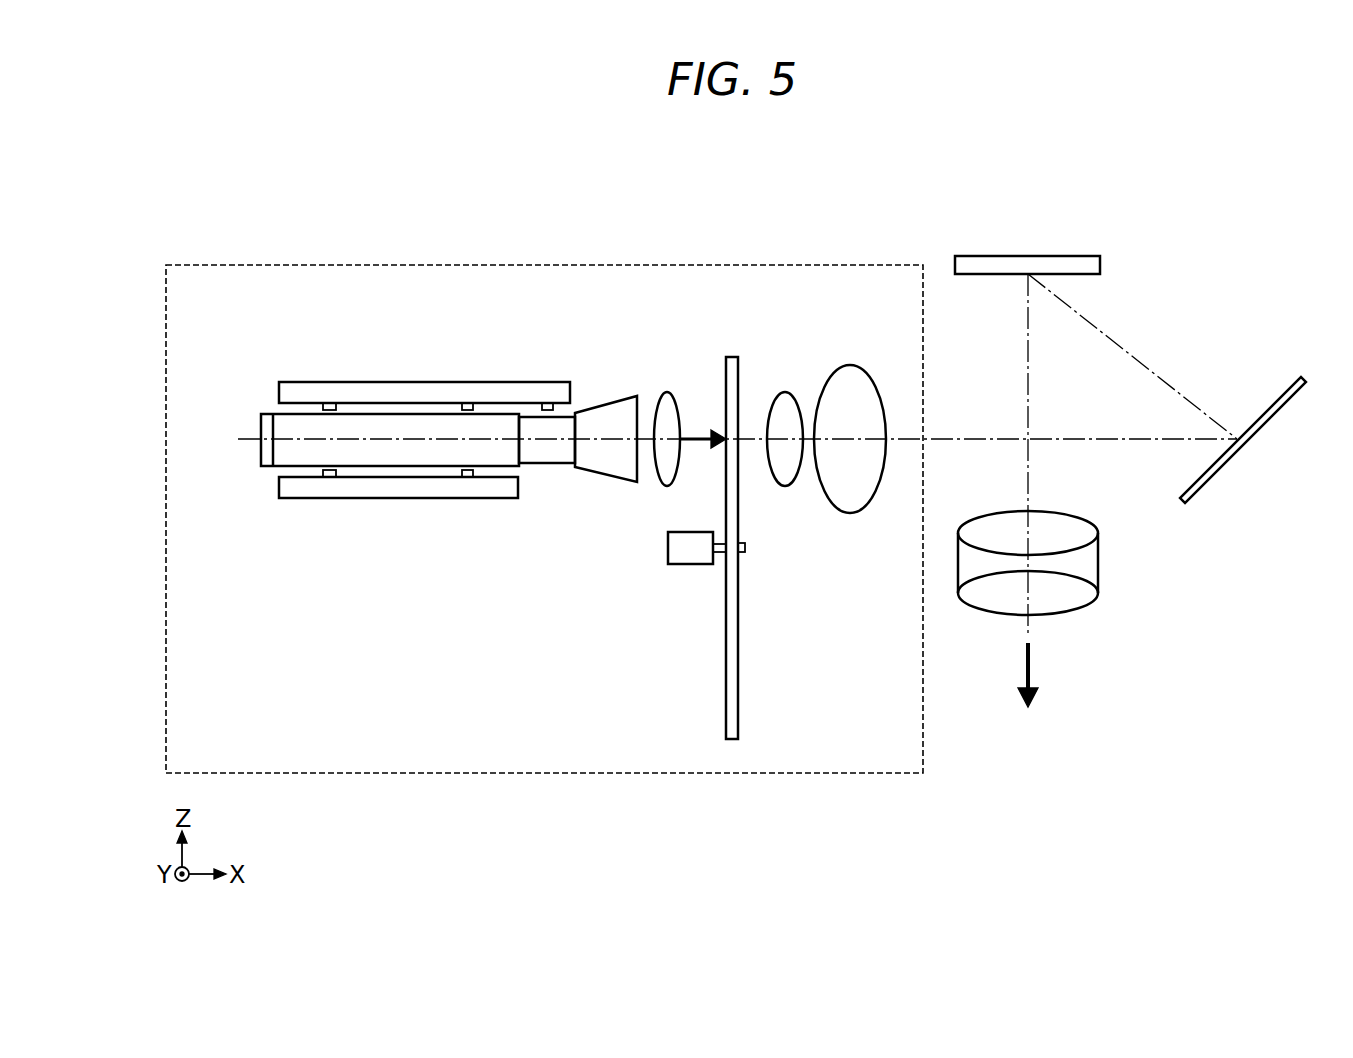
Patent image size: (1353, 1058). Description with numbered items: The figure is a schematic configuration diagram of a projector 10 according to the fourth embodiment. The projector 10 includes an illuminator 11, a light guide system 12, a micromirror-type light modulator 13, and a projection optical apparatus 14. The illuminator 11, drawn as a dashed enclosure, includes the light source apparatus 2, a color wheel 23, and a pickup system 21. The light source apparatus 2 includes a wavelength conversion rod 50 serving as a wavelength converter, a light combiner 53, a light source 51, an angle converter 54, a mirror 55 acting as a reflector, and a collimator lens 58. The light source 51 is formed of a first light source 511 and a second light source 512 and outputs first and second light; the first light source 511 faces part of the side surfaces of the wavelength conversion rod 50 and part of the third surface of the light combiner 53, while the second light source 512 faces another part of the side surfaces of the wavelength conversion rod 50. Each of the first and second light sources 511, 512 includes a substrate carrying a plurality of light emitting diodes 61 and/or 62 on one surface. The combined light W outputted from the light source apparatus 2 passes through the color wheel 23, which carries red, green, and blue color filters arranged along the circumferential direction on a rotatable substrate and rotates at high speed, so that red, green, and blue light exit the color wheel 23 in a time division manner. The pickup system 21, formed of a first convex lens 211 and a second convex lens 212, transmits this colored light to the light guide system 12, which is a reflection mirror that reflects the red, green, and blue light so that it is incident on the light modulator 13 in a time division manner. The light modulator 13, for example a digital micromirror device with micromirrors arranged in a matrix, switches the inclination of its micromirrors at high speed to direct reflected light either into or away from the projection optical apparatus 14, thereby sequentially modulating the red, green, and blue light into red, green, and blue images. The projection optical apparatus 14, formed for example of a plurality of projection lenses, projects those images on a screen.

The projector 10 is at (895, 238).
The illuminator 11 is at (415, 265).
The light source apparatus 2 is at (413, 592).
The wavelength conversion rod 50 is at (400, 462).
The mirror 55 is at (266, 430).
The light combiner 53 is at (540, 458).
The angle converter 54 is at (597, 462).
The light source 51 is at (411, 440).
The first light source 511 is at (302, 392).
The second light source 512 is at (304, 490).
The light emitting diodes 61 is at (467, 405).
The light emitting diodes 62 is at (546, 405).
The collimator lens 58 is at (663, 465).
The combined light W is at (686, 428).
The color wheel 23 is at (732, 665).
The pickup system 21 is at (857, 208).
The first convex lens 211 is at (785, 392).
The second convex lens 212 is at (850, 365).
The micromirror-type light modulator 13 is at (1005, 262).
The light guide system 12 is at (1268, 410).
The projection optical apparatus 14 is at (1088, 560).